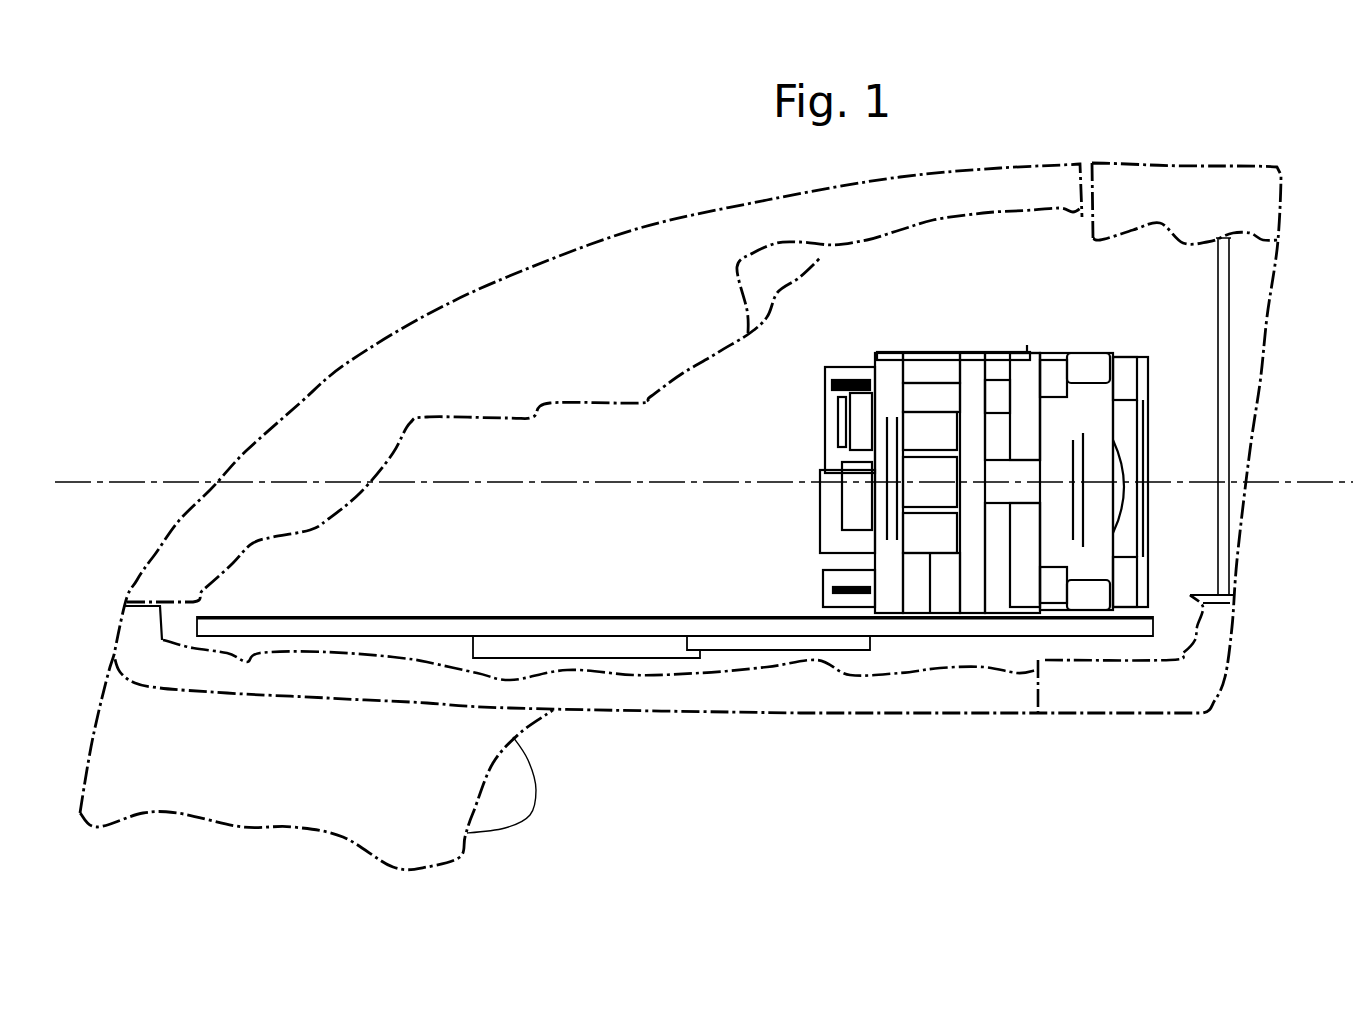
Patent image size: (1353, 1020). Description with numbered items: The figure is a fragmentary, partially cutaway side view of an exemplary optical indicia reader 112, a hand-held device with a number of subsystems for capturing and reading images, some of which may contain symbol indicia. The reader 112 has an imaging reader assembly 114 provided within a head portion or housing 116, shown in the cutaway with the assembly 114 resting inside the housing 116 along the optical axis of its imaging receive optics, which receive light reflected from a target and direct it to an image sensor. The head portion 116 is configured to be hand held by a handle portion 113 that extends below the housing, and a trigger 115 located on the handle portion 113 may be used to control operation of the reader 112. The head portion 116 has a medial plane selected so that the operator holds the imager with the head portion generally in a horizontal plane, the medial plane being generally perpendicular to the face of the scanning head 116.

The optical indicia reader 112 is at (516, 226).
The handle portion 113 is at (300, 768).
The imaging reader assembly 114 is at (999, 337).
The trigger 115 is at (535, 797).
The head portion or housing 116 is at (347, 363).